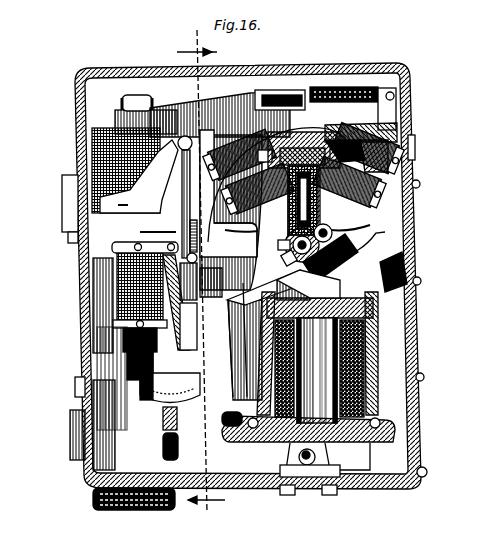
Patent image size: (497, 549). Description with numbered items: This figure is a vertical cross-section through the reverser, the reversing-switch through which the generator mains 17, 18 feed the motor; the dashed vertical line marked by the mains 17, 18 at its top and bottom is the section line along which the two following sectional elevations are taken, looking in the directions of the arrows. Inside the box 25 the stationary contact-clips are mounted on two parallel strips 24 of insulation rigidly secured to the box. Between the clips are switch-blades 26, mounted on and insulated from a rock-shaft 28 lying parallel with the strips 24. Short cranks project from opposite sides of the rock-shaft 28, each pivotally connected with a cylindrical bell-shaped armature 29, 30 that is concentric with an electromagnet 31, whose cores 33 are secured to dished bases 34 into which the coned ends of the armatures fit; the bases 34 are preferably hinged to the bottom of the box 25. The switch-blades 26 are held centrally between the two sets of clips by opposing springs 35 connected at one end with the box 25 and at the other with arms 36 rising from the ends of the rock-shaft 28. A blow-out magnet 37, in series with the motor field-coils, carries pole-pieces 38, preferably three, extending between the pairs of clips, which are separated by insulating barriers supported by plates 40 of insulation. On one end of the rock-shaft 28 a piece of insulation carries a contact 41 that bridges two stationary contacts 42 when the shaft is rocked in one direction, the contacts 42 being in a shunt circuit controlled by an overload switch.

The positive main 17 is at (197, 142).
The negative main 18 is at (206, 402).
The strips of insulation 24 is at (224, 165).
The box 25 is at (84, 307).
The switch-blades 26 is at (312, 160).
The rock-shaft 28 is at (280, 236).
The bell-shaped armature 29 is at (377, 352).
The bell-shaped armature 30 is at (237, 356).
The electromagnet 31 is at (348, 373).
The cores 33 is at (343, 390).
The dished bases 34 is at (370, 437).
The springs 35 is at (349, 87).
The arms 36 is at (281, 93).
The blow-out magnet 37 is at (92, 153).
The pole-pieces 38 is at (201, 271).
The plates of insulation 40 is at (365, 140).
The contact 41 is at (385, 232).
The stationary contacts 42 is at (404, 264).